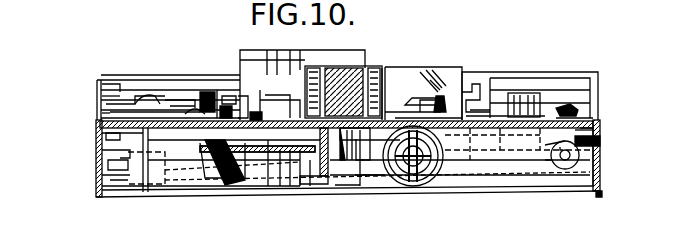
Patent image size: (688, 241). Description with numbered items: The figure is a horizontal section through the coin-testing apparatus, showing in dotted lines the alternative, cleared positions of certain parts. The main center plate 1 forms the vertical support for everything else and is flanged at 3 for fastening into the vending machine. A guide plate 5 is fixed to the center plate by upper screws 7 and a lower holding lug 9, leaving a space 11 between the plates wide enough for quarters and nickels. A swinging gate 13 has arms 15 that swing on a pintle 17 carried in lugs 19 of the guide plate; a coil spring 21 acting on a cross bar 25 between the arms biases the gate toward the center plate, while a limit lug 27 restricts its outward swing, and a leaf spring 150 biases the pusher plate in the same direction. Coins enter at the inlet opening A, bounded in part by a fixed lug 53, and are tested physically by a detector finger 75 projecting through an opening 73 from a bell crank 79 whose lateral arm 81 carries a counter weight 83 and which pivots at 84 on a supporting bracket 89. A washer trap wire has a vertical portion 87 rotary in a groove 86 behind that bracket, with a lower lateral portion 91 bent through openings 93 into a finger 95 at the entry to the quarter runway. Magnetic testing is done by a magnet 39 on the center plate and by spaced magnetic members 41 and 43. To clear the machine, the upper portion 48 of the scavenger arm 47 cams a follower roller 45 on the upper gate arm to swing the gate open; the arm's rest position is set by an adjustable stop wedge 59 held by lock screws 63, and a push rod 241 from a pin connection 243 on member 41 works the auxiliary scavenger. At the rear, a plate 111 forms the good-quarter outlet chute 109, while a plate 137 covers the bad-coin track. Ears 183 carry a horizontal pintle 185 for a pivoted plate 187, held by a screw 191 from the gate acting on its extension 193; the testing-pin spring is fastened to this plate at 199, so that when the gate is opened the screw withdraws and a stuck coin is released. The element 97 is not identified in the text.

The main center plate 1 is at (97, 120).
The flange 3 is at (96, 158).
The guide plate 5 is at (162, 240).
The upper screws 7 is at (350, 165).
The lower holding lug 9 is at (602, 141).
The space 11 is at (383, 120).
The swinging gate 13 is at (97, 143).
The arms 15 is at (178, 190).
The pintle 17 is at (570, 168).
The lugs 19 is at (600, 130).
The coil spring 21 is at (600, 160).
The cross bar 25 is at (515, 165).
The limit lug 27 is at (145, 195).
The magnet 39 is at (385, 118).
The magnetic member 41 is at (360, 190).
The magnetic member 43 is at (318, 95).
The follower roller 45 is at (413, 188).
The scavenger arm 47 is at (500, 115).
The upper portion of scavenger arm 48 is at (440, 98).
The fixed lug 53 is at (320, 195).
The adjustable stop wedge 59 is at (595, 118).
The lock screws 63 is at (562, 108).
The opening 73 is at (216, 192).
The detector finger 75 is at (238, 180).
The bell crank 79 is at (224, 106).
The laterally extending arm 81 is at (245, 112).
The counter weight 83 is at (280, 100).
The pivot 84 is at (226, 95).
The groove 86 is at (195, 110).
The vertical wire portion 87 is at (207, 92).
The supporting bracket 89 is at (185, 112).
The lower lateral wire portion 91 is at (255, 112).
The openings 93 is at (270, 186).
The finger 95 is at (300, 186).
The rod 97 is at (217, 95).
The outlet chute 109 is at (528, 72).
The plate 111 is at (478, 100).
The plate 137 is at (105, 197).
The leaf spring 150 is at (601, 196).
The outstanding ears 183 is at (97, 85).
The horizontal pintle 185 is at (130, 96).
The plate 187 is at (97, 97).
The screw 191 is at (97, 133).
The extension 193 is at (97, 115).
The fastening point 199 is at (148, 100).
The push rod 241 is at (420, 100).
The pin connection 243 is at (436, 100).
The inlet opening A is at (256, 233).